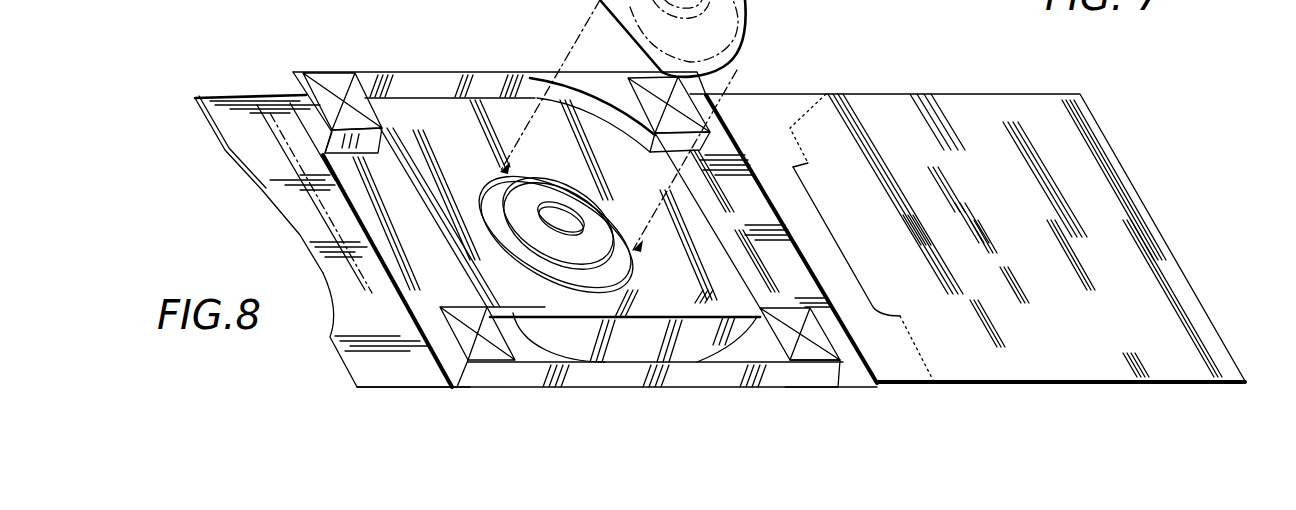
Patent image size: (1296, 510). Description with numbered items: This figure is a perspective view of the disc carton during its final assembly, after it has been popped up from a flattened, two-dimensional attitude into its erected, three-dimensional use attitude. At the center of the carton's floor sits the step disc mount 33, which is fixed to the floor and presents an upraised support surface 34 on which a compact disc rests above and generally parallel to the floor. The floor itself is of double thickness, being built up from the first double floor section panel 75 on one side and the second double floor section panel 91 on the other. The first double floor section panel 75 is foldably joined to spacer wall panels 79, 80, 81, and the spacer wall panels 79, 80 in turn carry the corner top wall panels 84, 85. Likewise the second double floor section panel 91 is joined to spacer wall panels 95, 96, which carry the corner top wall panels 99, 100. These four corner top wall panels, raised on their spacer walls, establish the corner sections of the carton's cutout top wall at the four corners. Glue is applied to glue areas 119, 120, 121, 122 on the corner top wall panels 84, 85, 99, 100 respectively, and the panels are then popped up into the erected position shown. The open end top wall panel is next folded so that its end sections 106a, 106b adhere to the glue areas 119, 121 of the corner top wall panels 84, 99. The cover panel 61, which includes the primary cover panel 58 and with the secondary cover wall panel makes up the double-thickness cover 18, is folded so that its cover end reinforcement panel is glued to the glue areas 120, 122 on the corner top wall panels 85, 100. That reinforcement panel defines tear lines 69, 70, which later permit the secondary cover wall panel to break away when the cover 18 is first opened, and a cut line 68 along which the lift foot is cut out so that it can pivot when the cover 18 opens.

The cover 18 is at (1140, 195).
The step disc mount 33 is at (755, 42).
The support surface 34 is at (543, 187).
The primary cover panel 58 is at (1203, 390).
The cover panel 61 is at (1108, 138).
The cut line 68 is at (833, 240).
The tear line 69 is at (912, 324).
The tear line 70 is at (828, 116).
The first double floor section panel 75 is at (437, 247).
The spacer wall panel 79 is at (377, 143).
The spacer wall panel 80 is at (663, 143).
The spacer wall panel 81 is at (477, 80).
The corner top wall panel 84 is at (377, 80).
The corner top wall panel 85 is at (593, 80).
The second double floor section panel 91 is at (640, 327).
The spacer wall panel 95 is at (423, 312).
The spacer wall panel 96 is at (753, 310).
The corner top wall panel 99 is at (522, 330).
The corner top wall panel 100 is at (737, 333).
The end section of open end top wall panel 106a is at (227, 128).
The end section of open end top wall panel 106b is at (360, 360).
The glue area 119 is at (333, 58).
The glue area 120 is at (718, 84).
The glue area 121 is at (473, 313).
The glue area 122 is at (813, 335).